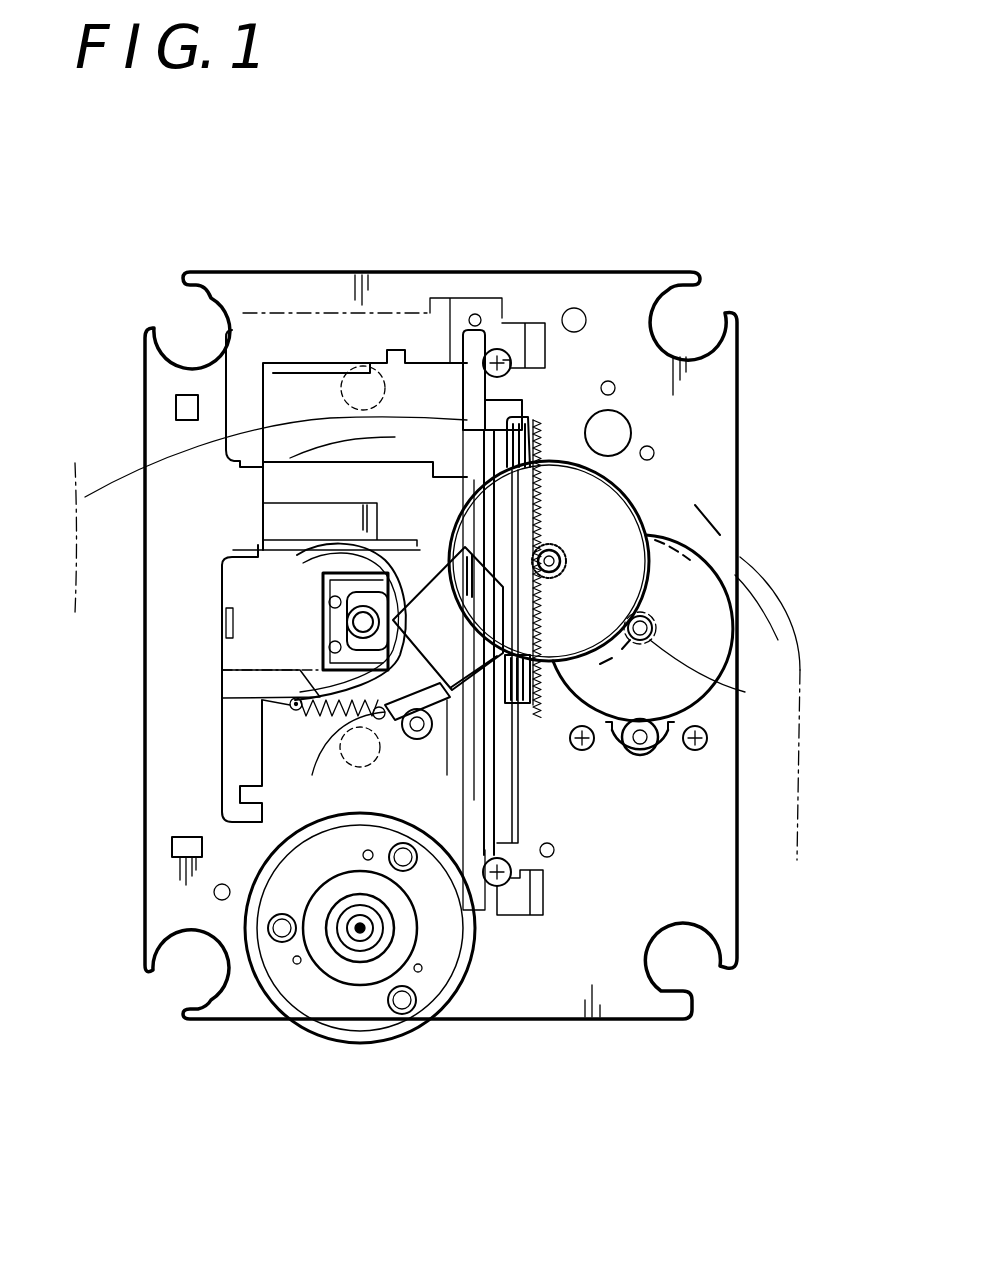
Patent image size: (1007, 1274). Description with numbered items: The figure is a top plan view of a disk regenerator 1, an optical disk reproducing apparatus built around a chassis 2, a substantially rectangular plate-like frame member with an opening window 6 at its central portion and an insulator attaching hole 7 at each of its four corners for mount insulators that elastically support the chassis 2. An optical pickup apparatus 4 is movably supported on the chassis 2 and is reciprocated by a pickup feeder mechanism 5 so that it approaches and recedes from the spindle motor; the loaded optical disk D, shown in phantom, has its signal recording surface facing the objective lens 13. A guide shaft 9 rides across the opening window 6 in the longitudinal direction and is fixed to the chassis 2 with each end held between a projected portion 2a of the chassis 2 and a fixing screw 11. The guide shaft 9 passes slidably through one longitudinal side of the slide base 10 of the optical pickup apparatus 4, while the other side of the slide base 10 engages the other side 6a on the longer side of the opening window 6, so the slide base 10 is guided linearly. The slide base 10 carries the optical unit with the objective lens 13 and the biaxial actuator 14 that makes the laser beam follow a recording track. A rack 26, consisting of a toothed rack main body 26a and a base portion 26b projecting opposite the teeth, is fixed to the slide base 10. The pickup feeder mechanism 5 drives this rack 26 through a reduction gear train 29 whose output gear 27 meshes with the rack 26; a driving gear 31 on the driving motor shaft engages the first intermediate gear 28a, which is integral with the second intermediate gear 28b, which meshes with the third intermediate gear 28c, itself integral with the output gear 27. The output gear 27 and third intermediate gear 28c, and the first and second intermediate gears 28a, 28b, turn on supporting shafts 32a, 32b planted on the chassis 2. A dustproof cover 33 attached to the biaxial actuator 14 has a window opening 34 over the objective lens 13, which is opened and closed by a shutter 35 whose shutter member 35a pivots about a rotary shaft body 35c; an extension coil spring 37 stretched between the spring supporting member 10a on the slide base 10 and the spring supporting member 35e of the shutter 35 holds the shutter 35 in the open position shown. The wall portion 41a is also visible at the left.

The disk regenerator 1 is at (390, 235).
The chassis 2 is at (585, 1000).
The projected portion 2a is at (447, 312).
The optical pickup apparatus 4 is at (416, 525).
The pickup feeder mechanism 5 is at (712, 708).
The opening window 6 is at (275, 410).
The other side on the longer side of the opening window 6a is at (248, 538).
The insulator attaching hole 7 is at (190, 300).
The guide shaft 9 is at (465, 386).
The slide base 10 is at (543, 800).
The spring supporting member 10a is at (292, 703).
The fixing screw 11 is at (503, 348).
The objective lens 13 is at (323, 614).
The biaxial actuator 14 is at (323, 640).
The rack 26 is at (545, 760).
The rack main body 26a is at (540, 425).
The base portion 26b is at (468, 477).
The output gear 27 is at (700, 565).
The first intermediate gear 28a is at (700, 597).
The second intermediate gear 28b is at (650, 633).
The third intermediate gear 28c is at (545, 468).
The reduction gear train 29 is at (680, 520).
The driving gear 31 is at (655, 748).
The supporting shaft 32a is at (745, 692).
The supporting shaft 32b is at (560, 555).
The dustproof cover 33 is at (240, 660).
The window opening 34 is at (352, 583).
The shutter 35 is at (380, 752).
The shutter member 35a is at (447, 775).
The rotary shaft body 35c is at (416, 742).
The spring supporting member 35e is at (321, 758).
The extension coil spring 37 is at (295, 707).
The wall portion 41a is at (205, 572).
The optical disk D is at (795, 615).